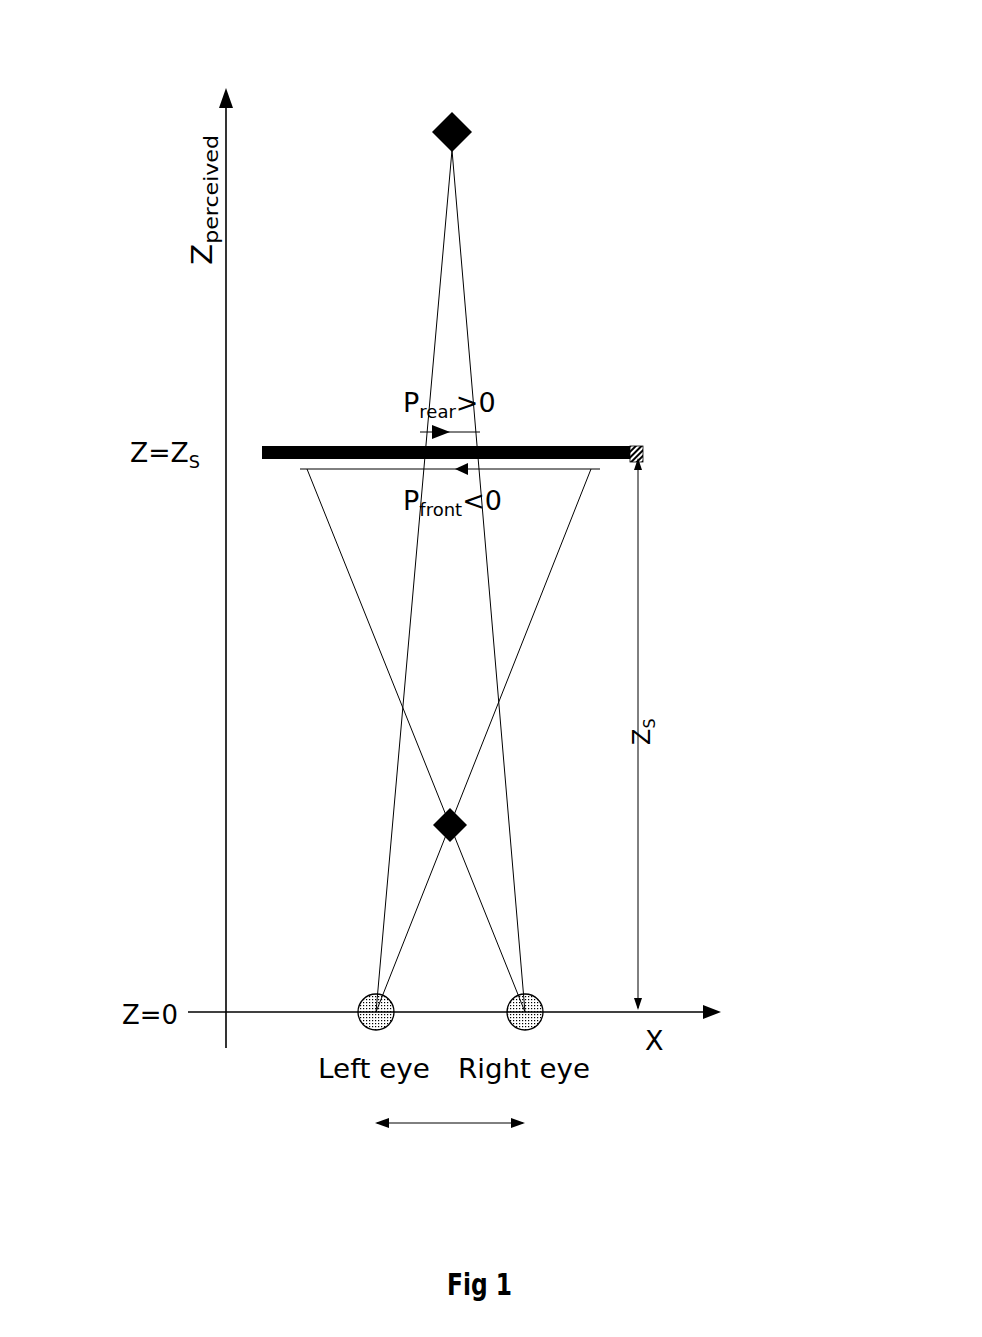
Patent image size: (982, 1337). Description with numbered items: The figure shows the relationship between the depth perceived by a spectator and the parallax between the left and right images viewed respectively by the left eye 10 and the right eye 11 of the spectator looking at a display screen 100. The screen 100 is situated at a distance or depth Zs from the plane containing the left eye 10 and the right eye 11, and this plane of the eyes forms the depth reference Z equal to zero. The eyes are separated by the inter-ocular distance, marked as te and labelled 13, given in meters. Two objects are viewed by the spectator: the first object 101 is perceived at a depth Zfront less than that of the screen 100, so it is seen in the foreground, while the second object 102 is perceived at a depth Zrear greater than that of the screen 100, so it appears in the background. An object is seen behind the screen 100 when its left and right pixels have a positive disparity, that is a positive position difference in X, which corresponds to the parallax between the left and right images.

The display screen 100 is at (630, 445).
The first object 101 is at (433, 828).
The second object 102 is at (435, 128).
The left eye 10 is at (358, 1018).
The right eye 11 is at (545, 1018).
The eye separation distance te 13 is at (470, 1141).